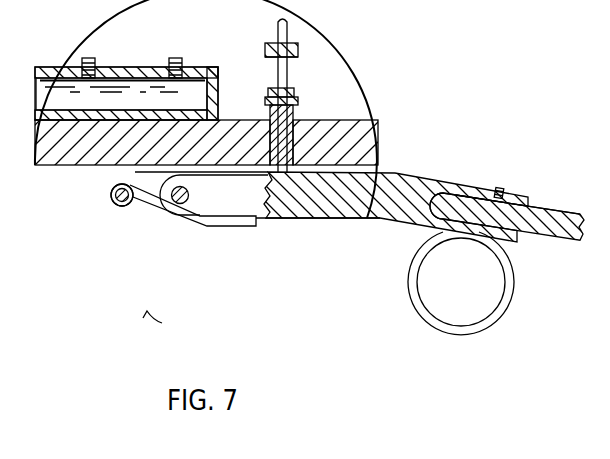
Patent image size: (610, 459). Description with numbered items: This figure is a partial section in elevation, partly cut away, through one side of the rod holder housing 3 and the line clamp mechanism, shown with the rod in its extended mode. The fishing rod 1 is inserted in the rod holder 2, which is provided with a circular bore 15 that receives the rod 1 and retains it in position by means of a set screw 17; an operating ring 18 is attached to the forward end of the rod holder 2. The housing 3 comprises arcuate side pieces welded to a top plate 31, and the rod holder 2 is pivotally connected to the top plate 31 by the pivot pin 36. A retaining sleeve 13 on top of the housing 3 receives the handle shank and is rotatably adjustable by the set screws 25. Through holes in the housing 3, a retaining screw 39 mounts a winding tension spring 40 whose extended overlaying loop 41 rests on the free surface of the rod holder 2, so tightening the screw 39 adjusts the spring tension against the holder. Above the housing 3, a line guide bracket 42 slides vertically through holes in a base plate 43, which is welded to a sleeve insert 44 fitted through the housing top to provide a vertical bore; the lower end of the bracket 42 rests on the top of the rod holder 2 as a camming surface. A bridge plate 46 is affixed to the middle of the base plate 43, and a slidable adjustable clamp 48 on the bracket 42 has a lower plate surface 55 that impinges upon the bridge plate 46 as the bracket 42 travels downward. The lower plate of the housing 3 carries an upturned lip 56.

The fishing rod 1 is at (542, 236).
The rod holder 2 is at (413, 178).
The rod holder housing 3 is at (302, 290).
The retaining sleeve 13 is at (135, 66).
The circular bore 15 is at (539, 207).
The set screw 17 is at (502, 189).
The operating ring 18 is at (473, 329).
The set screws 25 is at (87, 57).
The top plate 31 is at (372, 119).
The pivot pin 36 is at (190, 193).
The retaining screw 39 is at (110, 194).
The winding tension spring 40 is at (124, 206).
The extended overlaying loop 41 is at (212, 226).
The line guide bracket 42 is at (288, 22).
The base plate 43 is at (298, 101).
The sleeve insert 44 is at (270, 115).
The bridge plate 46 is at (294, 91).
The slidable adjustable clamp 48 is at (298, 49).
The lower plate surface 55 is at (268, 55).
The upturned lip 56 is at (148, 321).